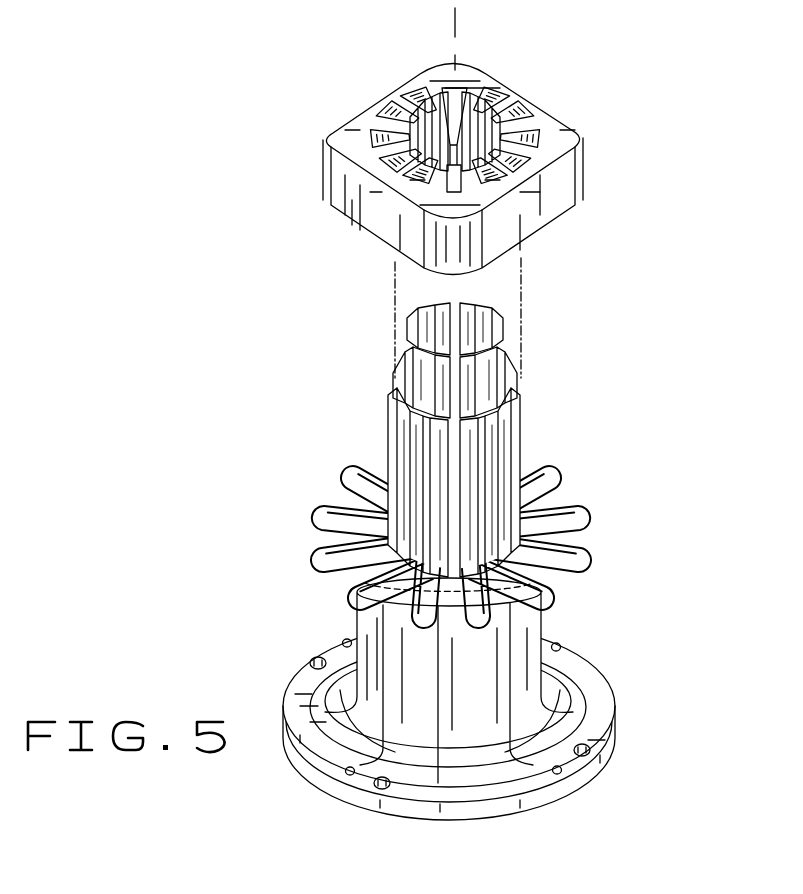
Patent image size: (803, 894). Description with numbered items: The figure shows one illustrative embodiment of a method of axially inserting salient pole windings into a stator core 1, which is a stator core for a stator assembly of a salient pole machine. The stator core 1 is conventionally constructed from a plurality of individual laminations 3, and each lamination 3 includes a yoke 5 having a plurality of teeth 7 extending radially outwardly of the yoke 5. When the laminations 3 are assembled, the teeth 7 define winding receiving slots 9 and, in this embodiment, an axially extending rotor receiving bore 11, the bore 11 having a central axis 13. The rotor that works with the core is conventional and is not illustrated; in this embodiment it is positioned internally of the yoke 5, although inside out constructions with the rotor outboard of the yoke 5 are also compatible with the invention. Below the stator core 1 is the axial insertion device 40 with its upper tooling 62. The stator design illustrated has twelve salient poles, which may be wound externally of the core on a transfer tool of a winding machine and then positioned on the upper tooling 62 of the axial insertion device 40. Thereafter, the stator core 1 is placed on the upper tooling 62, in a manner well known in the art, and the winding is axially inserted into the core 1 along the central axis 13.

The stator core 1 is at (481, 193).
The lamination 3 is at (454, 169).
The yoke 5 is at (356, 137).
The teeth 7 is at (410, 108).
The winding receiving slots 9 is at (514, 116).
The rotor receiving bore 11 is at (460, 136).
The central axis 13 is at (455, 34).
The axial insertion device 40 is at (588, 622).
The upper tooling 62 is at (593, 513).